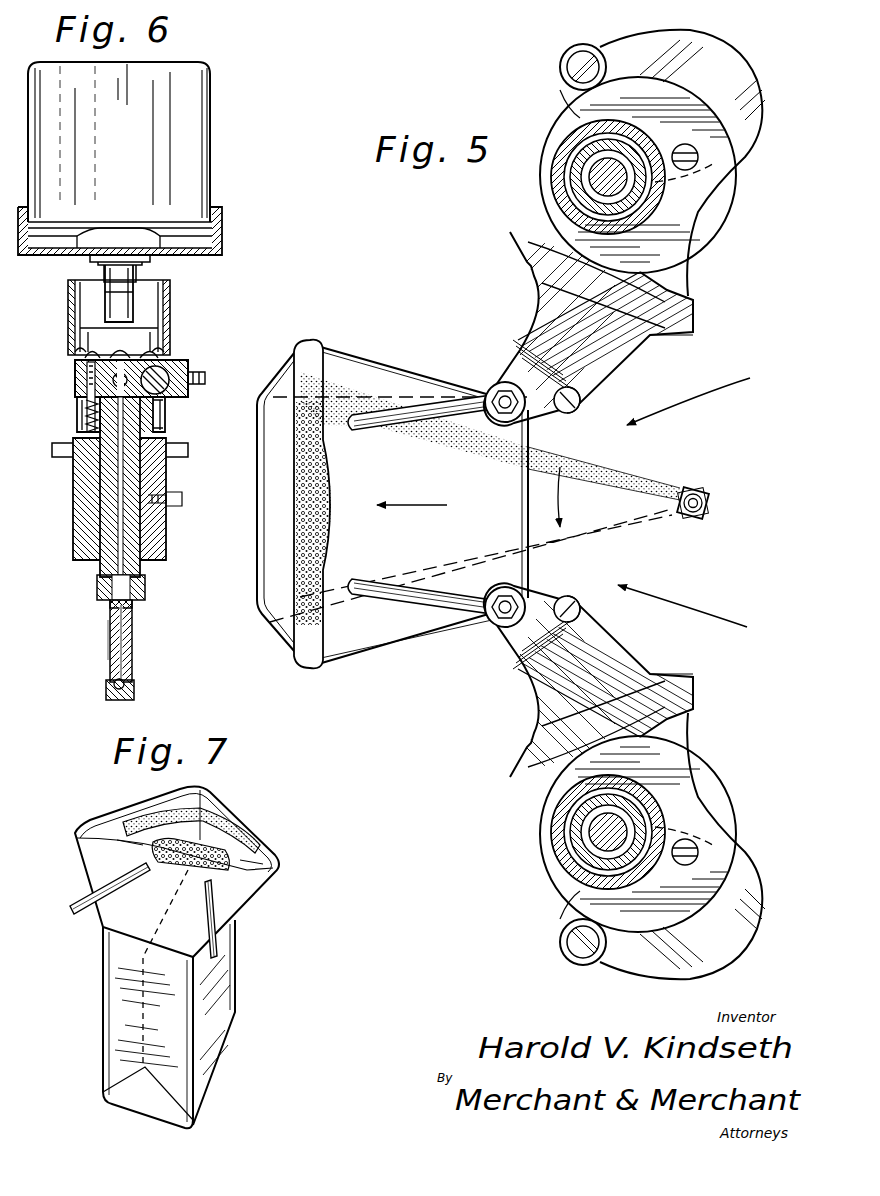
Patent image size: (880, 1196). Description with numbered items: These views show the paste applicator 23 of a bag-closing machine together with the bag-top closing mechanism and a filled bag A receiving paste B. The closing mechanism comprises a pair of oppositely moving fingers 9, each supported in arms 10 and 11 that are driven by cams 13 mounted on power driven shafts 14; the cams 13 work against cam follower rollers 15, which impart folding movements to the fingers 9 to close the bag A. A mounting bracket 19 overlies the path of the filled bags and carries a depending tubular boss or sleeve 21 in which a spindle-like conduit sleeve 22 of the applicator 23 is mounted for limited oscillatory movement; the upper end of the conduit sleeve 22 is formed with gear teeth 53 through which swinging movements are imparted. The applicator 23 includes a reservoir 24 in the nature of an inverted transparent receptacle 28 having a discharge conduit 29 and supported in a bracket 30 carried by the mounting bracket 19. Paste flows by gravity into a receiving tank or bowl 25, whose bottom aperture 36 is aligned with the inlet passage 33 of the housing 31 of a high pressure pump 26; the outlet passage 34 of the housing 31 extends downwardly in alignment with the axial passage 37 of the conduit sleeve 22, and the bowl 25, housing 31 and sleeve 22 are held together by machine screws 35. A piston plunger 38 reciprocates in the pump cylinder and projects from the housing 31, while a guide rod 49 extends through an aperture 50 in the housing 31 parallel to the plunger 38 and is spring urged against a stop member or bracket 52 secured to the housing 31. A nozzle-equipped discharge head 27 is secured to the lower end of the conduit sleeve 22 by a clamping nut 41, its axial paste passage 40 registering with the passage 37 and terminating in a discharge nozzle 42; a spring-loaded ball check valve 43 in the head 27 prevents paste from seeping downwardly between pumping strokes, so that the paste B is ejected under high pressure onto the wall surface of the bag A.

In FIG. 5, the fingers 9 is at (412, 420).
In FIG. 7, the fingers 9 is at (78, 905).
In FIG. 5, the arm 10 is at (542, 310).
In FIG. 5, the arm 11 is at (625, 352).
In FIG. 5, the cam 13 is at (702, 218).
In FIG. 5, the power driven shaft 14 is at (600, 178).
In FIG. 5, the cam follower roller 15 is at (560, 68).
In FIG. 6, the mounting bracket 19 is at (62, 452).
In FIG. 6, the tubular boss or sleeve 21 is at (80, 512).
In FIG. 6, the conduit sleeve 22 is at (110, 532).
In FIG. 6, the paste applicator 23 is at (72, 384).
In FIG. 6, the reservoir 24 is at (198, 186).
In FIG. 6, the receiving tank or bowl 25 is at (148, 333).
In FIG. 6, the high pressure pump 26 is at (77, 372).
In FIG. 6, the discharge head 27 is at (108, 642).
In FIG. 6, the receptacle 28 is at (128, 147).
In FIG. 6, the discharge conduit 29 is at (115, 296).
In FIG. 6, the bracket 30 is at (222, 242).
In FIG. 6, the pump housing 31 is at (184, 360).
In FIG. 6, the inlet passage 33 is at (90, 356).
In FIG. 6, the outlet passage 34 is at (160, 404).
In FIG. 6, the machine screws 35 is at (86, 410).
In FIG. 6, the aperture 36 is at (126, 358).
In FIG. 6, the axial passage 37 is at (122, 540).
In FIG. 6, the piston plunger 38 is at (92, 384).
In FIG. 6, the axial paste passage 40 is at (122, 640).
In FIG. 6, the clamping nut 41 is at (146, 592).
In FIG. 6, the discharge nozzle 42 is at (135, 692).
In FIG. 6, the spring-loaded ball check valve 43 is at (114, 684).
In FIG. 6, the guide rod 49 is at (205, 378).
In FIG. 6, the aperture 50 is at (168, 374).
In FIG. 6, the stop member or bracket 52 is at (186, 395).
In FIG. 6, the gear teeth 53 is at (160, 424).
In FIG. 5, the bag A is at (280, 624).
In FIG. 7, the bag A is at (225, 1020).
In FIG. 7, the paste B is at (225, 832).